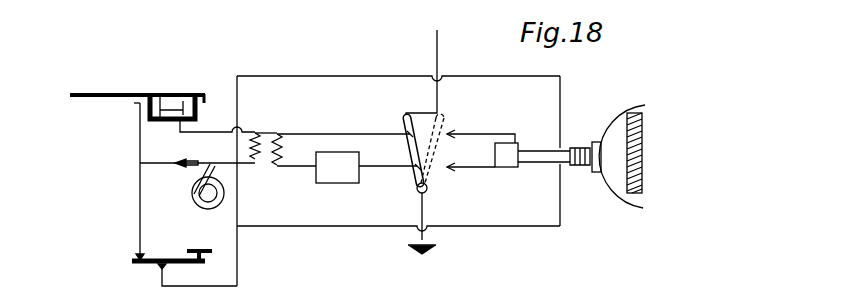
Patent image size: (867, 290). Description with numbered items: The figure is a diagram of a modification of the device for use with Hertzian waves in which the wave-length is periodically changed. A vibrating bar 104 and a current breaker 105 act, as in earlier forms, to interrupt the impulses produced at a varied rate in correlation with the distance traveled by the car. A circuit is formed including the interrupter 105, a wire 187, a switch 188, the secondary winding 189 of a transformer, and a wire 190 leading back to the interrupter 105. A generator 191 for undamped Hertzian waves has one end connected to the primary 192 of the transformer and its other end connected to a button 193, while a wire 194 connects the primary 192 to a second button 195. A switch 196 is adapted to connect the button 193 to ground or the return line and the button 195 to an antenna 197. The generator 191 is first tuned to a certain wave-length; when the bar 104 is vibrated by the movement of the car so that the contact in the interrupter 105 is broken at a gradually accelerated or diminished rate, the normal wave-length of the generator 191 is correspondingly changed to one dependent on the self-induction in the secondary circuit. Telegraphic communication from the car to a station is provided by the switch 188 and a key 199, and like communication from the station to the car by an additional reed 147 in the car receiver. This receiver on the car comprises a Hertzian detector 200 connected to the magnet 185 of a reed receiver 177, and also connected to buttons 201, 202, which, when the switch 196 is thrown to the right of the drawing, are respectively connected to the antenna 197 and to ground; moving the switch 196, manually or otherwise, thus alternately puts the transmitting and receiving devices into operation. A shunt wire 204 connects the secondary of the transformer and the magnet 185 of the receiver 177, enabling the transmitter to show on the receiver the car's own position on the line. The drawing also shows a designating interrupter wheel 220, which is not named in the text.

The vibrating bar 104 is at (158, 93).
The current breaker 105 is at (148, 102).
The additional reed 147 is at (642, 193).
The reed receiver 177 is at (600, 148).
The magnet 185 is at (580, 147).
The wire 187 is at (140, 203).
The switch 188 is at (186, 165).
The secondary winding 189 is at (256, 165).
The wire 190 is at (228, 133).
The generator for undamped Hertzian waves 191 is at (350, 184).
The primary 192 is at (285, 129).
The button 193 is at (414, 172).
The wire 194 is at (350, 134).
The second button 195 is at (406, 134).
The switch 196 is at (440, 190).
The antenna 197 is at (438, 72).
The key 199 is at (152, 266).
The Hertzian detector 200 is at (508, 148).
The button 201 is at (468, 148).
The button 202 is at (471, 161).
The shunt wire 204 is at (347, 228).
The electromagnet coil 220 is at (192, 196).